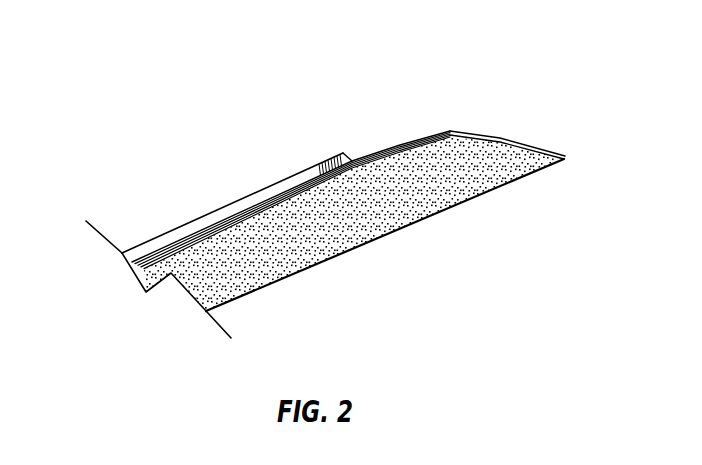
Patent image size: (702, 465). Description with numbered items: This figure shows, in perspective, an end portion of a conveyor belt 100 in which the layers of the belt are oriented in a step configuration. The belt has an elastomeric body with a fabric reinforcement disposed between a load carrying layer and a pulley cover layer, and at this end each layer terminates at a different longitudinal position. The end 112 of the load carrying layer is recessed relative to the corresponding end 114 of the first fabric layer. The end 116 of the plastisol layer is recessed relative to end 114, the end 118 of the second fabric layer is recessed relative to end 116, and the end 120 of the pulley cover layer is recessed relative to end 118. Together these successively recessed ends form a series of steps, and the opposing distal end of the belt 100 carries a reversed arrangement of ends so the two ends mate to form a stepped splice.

The conveyor belt 100 is at (155, 57).
The end of load carrying layer 112 is at (310, 167).
The end of first fabric layer 114 is at (368, 153).
The end of plastisol layer 116 is at (395, 148).
The end of second fabric layer 118 is at (407, 143).
The end of pulley cover layer 120 is at (534, 144).